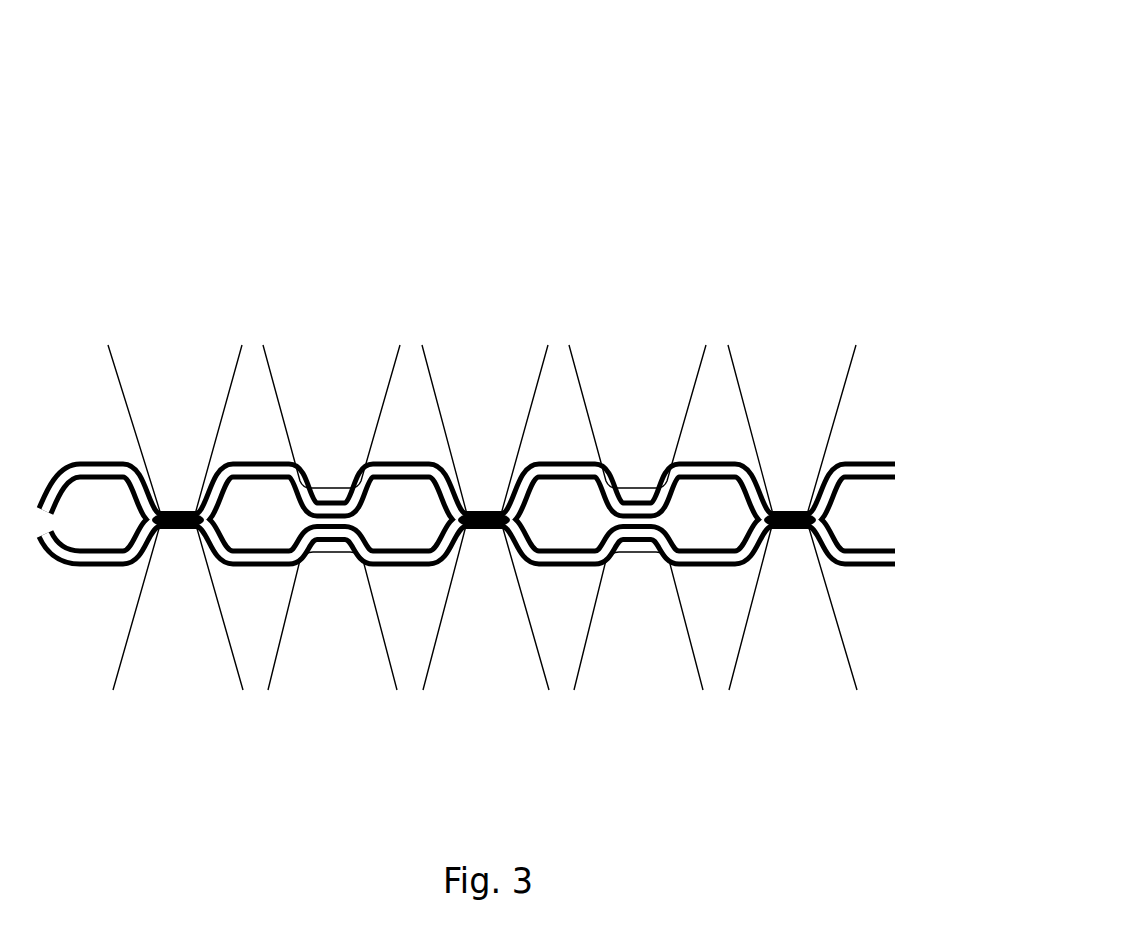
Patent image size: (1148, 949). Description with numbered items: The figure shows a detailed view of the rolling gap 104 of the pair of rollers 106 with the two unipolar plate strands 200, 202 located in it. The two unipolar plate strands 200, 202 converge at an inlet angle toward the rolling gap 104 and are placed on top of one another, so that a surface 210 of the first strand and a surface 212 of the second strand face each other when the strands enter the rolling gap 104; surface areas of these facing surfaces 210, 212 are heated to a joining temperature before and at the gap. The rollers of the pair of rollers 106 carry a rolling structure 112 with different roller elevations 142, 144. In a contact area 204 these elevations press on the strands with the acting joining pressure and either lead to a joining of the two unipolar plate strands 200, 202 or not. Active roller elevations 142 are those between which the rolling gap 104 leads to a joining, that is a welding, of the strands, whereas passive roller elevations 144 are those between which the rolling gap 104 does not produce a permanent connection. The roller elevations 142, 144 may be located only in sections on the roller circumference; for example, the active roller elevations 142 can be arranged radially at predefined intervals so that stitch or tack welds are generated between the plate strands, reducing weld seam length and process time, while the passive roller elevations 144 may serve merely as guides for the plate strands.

The rolling gap 104 is at (501, 498).
The pair of rollers 106 is at (501, 434).
The rolling structure 112 is at (826, 432).
The active roller elevations 142 is at (525, 504).
The passive roller elevations 144 is at (335, 380).
The first unipolar plate strand 200 is at (470, 626).
The second unipolar plate strand 202 is at (470, 414).
The contact area 204 is at (177, 505).
The surface of first unipolar plate strand 210 is at (115, 478).
The surface of second unipolar plate strand 212 is at (91, 548).